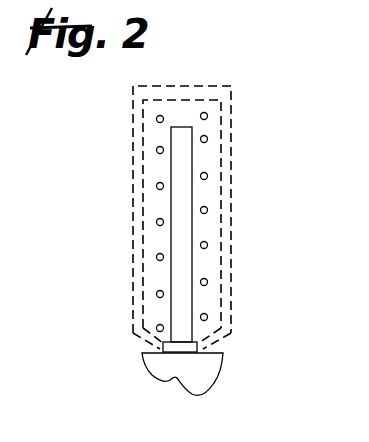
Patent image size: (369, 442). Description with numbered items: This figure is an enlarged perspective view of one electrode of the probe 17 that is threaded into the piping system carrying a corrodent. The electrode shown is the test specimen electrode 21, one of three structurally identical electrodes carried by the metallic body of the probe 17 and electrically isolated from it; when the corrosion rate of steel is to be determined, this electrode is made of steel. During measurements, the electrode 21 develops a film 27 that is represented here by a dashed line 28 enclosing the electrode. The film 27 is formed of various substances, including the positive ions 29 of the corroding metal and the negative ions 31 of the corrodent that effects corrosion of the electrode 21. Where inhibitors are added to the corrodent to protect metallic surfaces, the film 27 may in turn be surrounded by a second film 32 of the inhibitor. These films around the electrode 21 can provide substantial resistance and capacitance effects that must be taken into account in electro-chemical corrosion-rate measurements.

The probe 17 is at (198, 362).
The test specimen electrode 21 is at (182, 303).
The film 27 is at (203, 228).
The dashed line 28 is at (221, 165).
The positive ions 29 is at (156, 185).
The negative ions 31 is at (156, 150).
The second film 32 is at (231, 118).